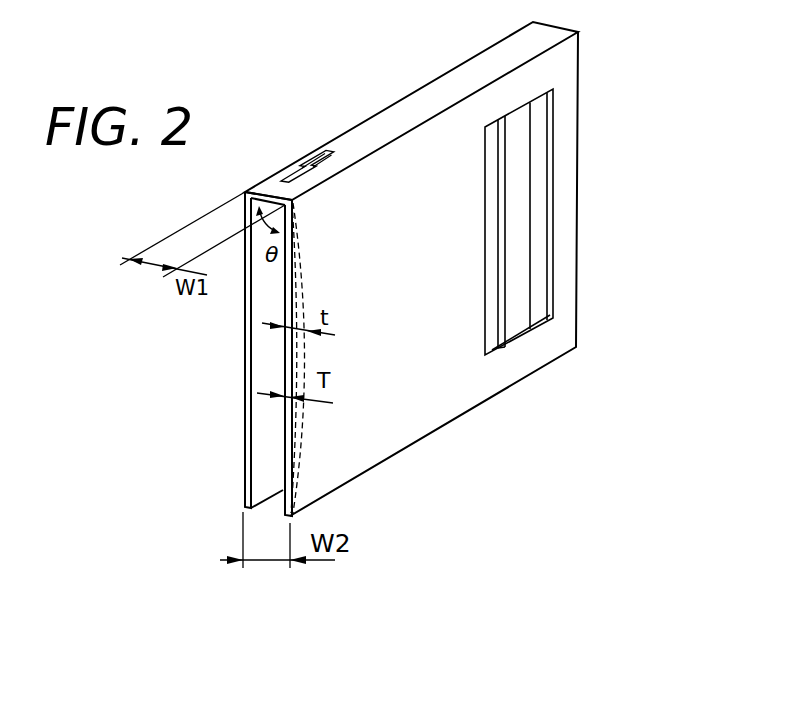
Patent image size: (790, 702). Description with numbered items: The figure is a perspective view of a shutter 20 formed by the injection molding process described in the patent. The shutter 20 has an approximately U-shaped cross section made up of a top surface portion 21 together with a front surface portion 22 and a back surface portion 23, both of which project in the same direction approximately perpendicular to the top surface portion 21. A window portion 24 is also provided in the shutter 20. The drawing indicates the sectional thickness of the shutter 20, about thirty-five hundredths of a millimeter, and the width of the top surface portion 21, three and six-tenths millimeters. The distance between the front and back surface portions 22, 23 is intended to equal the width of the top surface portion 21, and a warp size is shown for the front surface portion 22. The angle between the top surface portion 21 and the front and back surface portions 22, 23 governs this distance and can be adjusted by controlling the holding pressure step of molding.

The shutter 20 is at (410, 261).
The top surface portion 21 is at (342, 142).
The front surface portion 22 is at (266, 362).
The back surface portion 23 is at (467, 274).
The window portion 24 is at (548, 297).